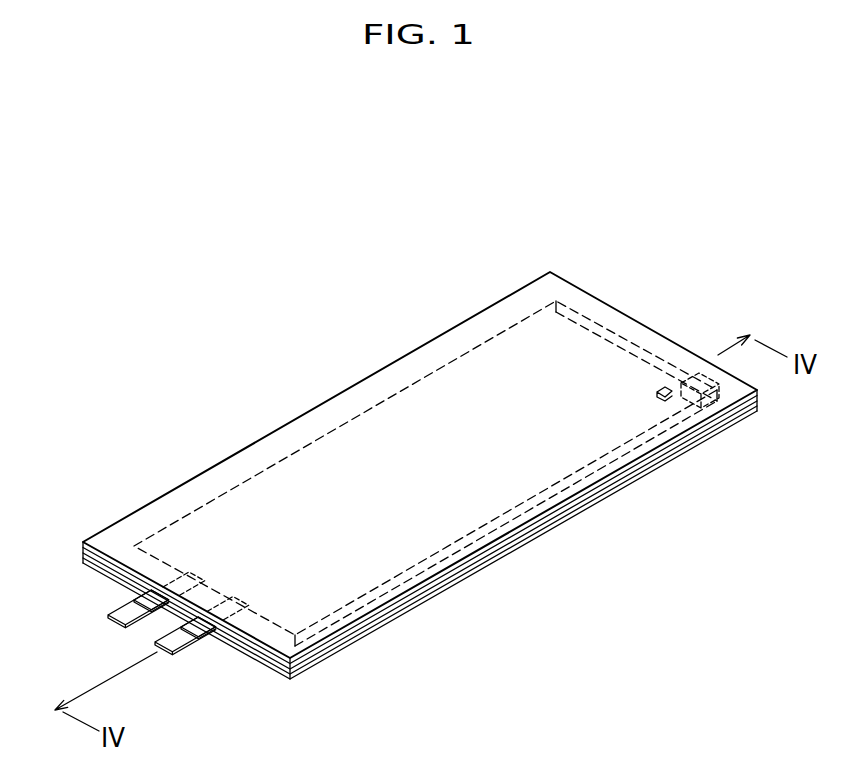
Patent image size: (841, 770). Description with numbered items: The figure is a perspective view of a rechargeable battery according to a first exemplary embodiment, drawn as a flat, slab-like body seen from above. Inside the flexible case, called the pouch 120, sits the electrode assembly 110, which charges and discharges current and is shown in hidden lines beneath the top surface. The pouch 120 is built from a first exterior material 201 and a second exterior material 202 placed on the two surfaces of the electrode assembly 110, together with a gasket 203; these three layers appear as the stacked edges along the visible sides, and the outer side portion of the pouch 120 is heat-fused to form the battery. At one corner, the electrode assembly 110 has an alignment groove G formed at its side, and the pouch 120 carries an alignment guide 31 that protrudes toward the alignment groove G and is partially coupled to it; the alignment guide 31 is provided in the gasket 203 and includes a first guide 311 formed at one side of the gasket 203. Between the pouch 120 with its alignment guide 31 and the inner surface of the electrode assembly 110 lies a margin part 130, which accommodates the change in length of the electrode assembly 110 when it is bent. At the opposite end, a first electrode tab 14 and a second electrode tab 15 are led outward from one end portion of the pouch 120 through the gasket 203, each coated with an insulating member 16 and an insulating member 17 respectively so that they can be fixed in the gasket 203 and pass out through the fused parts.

The electrode assembly 110 is at (380, 397).
The pouch 120 is at (420, 475).
The margin part 130 is at (581, 318).
The alignment guide 31 is at (716, 332).
The first guide 311 is at (672, 378).
The alignment groove G is at (670, 392).
The first exterior material 201 is at (686, 545).
The second exterior material 202 is at (577, 497).
The gasket 203 is at (547, 523).
The first electrode tab 14 is at (180, 647).
The second electrode tab 15 is at (118, 618).
The insulating member 16 is at (204, 628).
The insulating member 17 is at (148, 594).